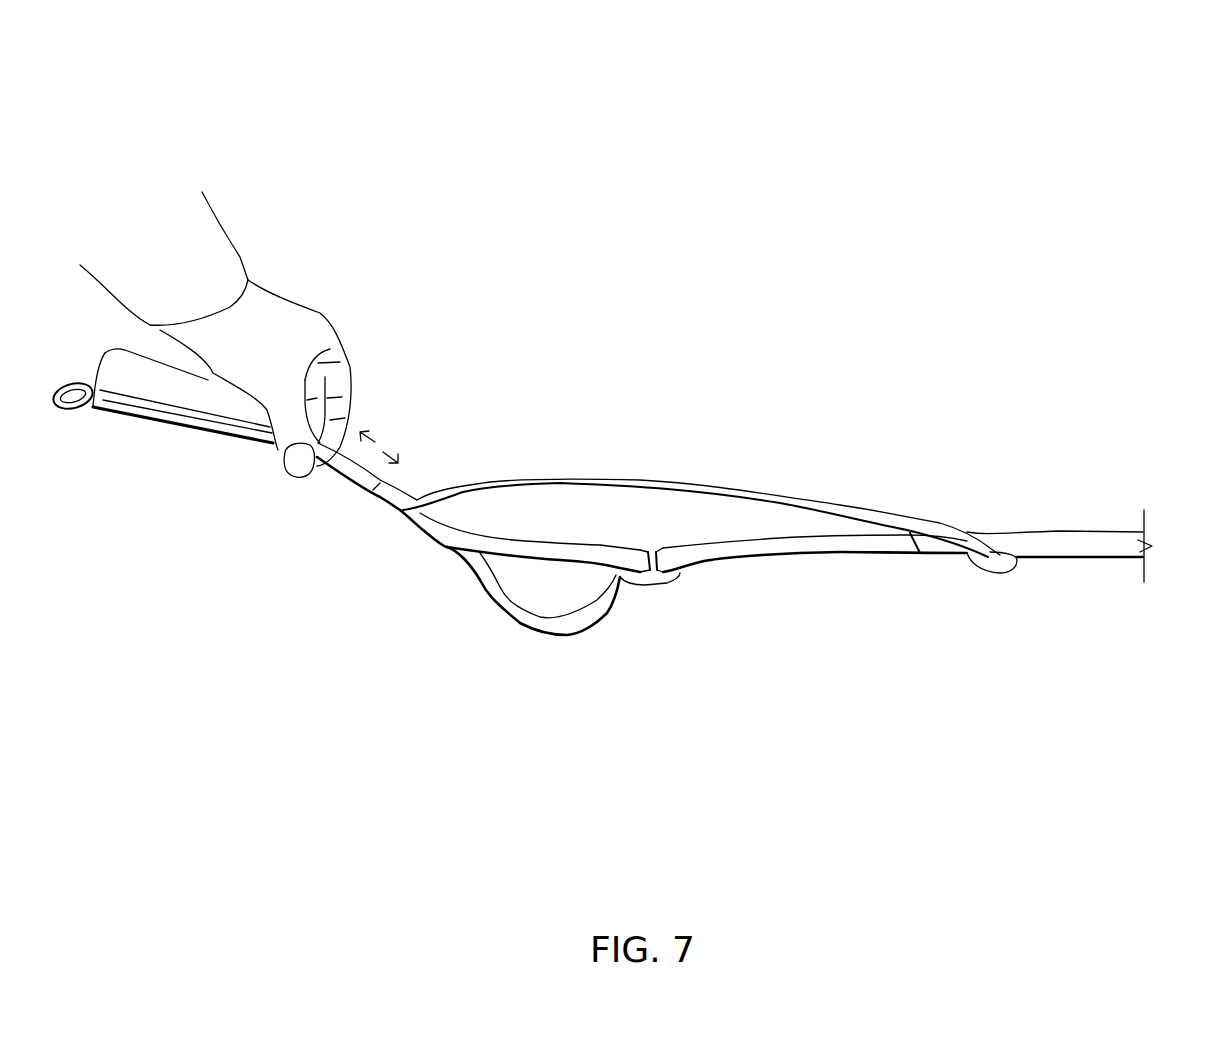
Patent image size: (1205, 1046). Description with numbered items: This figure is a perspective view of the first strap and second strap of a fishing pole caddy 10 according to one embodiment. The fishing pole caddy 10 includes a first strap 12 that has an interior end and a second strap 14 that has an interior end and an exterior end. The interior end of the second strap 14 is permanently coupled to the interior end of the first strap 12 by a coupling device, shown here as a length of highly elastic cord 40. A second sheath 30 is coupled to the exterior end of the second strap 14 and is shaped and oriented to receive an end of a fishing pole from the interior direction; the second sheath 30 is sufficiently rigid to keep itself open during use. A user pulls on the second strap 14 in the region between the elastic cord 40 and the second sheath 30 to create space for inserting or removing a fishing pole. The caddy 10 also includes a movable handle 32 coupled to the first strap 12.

The fishing pole caddy 10 is at (897, 127).
The first strap 12 is at (940, 449).
The second strap 14 is at (160, 453).
The second sheath 30 is at (117, 363).
The movable handle 32 is at (583, 645).
The highly elastic cord 40 is at (328, 497).